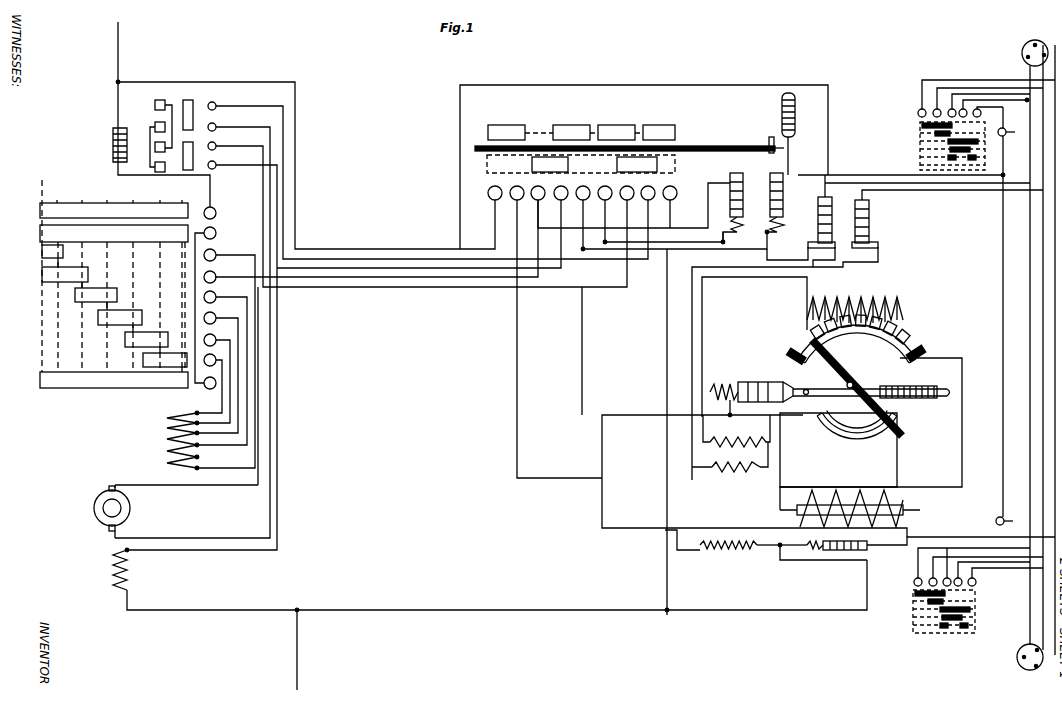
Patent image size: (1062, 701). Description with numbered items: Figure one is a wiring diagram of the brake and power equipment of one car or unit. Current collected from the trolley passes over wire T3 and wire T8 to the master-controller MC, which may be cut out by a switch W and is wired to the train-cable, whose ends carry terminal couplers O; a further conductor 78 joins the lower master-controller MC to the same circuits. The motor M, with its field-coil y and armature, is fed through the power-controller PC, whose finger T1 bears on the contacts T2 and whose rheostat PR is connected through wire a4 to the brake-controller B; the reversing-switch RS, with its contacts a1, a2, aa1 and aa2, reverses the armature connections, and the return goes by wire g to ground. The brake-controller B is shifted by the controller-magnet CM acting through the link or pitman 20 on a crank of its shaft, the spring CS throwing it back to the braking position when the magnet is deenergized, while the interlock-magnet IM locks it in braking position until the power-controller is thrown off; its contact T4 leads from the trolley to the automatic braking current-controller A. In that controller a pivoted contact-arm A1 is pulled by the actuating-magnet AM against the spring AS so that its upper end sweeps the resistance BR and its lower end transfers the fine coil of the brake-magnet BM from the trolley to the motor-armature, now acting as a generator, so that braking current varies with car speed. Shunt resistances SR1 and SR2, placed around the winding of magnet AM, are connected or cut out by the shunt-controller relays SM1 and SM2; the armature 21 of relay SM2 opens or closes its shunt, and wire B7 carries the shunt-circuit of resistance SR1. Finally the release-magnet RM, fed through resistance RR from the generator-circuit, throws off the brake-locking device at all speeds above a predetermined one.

The wire T3 is at (305, 135).
The reversing-switch RS is at (153, 136).
The reversing-switch contact aa2 is at (428, 175).
The reversing-switch contact aa1 is at (192, 325).
The reversing-switch contact a1 is at (417, 209).
The reversing-switch contact a2 is at (344, 350).
The wire a4 is at (326, 345).
The power-controller PC is at (101, 284).
The finger T1 is at (217, 213).
The power-controller contacts T2 is at (213, 314).
The rheostat PR is at (188, 356).
The motor M is at (115, 514).
The field-coil y is at (195, 623).
The wire g is at (581, 432).
The wire T8 is at (731, 158).
The brake-controller B is at (621, 139).
The brake-controller contact T4 is at (697, 360).
The spring CS is at (800, 134).
The link or pitman 20 is at (790, 160).
The controller-magnet CM is at (787, 202).
The interlock-magnet IM is at (742, 207).
The shunt-controller magnet SM2 is at (919, 210).
The shunt-controller magnet SM1 is at (947, 214).
The armature 21 is at (888, 250).
The wire B7 is at (754, 347).
The automatic braking current-controller A is at (872, 412).
The pivoted contact-arm A1 is at (857, 388).
The resistance BR is at (864, 307).
The actuating-magnet AM is at (749, 387).
The spring AS is at (871, 403).
The shunt resistance SR1 is at (736, 431).
The shunt resistance SR2 is at (742, 457).
The brake-magnet BM is at (863, 508).
The resistance RR is at (722, 530).
The release-magnet RM is at (916, 540).
The switch W is at (999, 328).
The conductor 78 is at (996, 312).
The master-controller MC is at (968, 367).
The terminal couplers O is at (1031, 359).